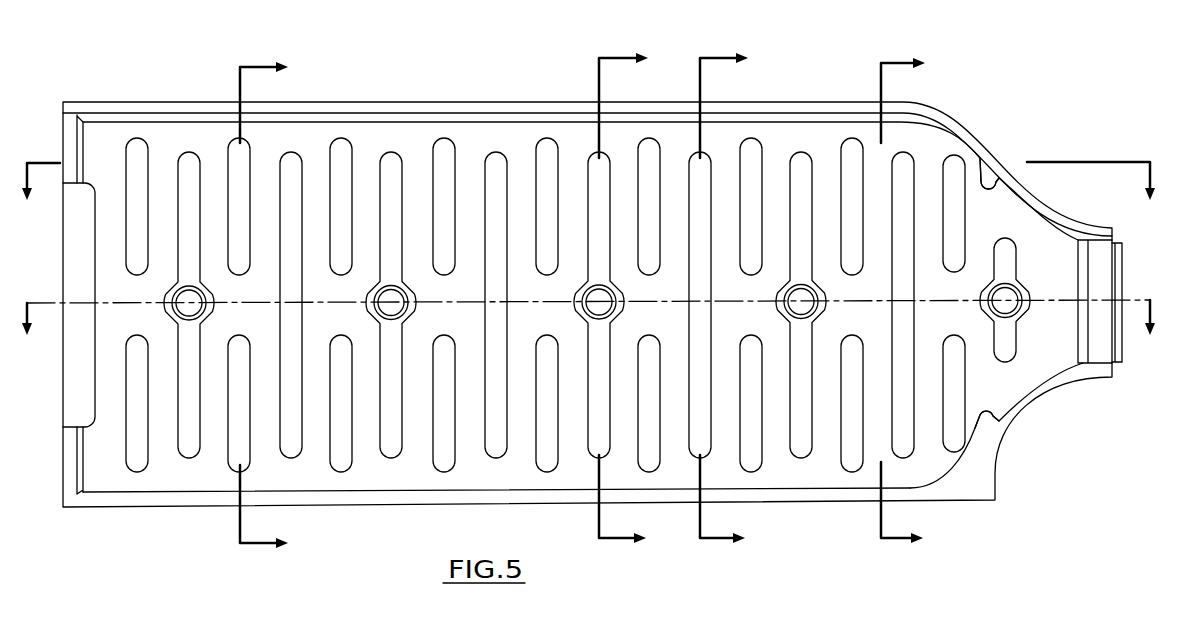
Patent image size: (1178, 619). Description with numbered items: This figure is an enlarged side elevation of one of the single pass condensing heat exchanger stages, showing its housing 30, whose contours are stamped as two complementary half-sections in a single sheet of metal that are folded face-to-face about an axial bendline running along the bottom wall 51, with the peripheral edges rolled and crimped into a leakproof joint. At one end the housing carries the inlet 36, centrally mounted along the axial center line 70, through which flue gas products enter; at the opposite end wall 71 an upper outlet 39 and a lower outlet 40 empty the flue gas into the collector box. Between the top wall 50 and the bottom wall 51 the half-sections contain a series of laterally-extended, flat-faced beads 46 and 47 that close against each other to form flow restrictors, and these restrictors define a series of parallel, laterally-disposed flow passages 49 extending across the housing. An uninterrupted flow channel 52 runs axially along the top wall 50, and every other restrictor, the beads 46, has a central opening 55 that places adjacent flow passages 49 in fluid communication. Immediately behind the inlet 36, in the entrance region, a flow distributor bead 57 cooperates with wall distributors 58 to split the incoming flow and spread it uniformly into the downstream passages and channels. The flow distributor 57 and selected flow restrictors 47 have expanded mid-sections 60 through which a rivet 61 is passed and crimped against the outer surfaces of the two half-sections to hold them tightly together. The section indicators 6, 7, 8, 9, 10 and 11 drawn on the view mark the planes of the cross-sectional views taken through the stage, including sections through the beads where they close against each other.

The housing 30 is at (452, 82).
The top wall 50 is at (100, 108).
The bottom wall 51 is at (137, 504).
The upper outlet 39 is at (66, 156).
The lower outlet 40 is at (67, 468).
The end wall 71 is at (80, 258).
The flat-faced bead 46 is at (343, 137).
The flat-faced bead 47 is at (496, 150).
The flow channel 52 is at (585, 130).
The flow passage 49 is at (367, 398).
The expanded mid-section 60 is at (410, 295).
The rivet 61 is at (788, 312).
The axial center line 70 is at (357, 307).
The central opening 55 is at (873, 325).
The flow distributor bead 57 is at (1007, 355).
The wall distributor 58 is at (985, 177).
The inlet 36 is at (1100, 272).
The section line 6- 6 is at (589, 197).
The section line 7- 7 is at (590, 335).
The section line 8- 8 is at (734, 300).
The section line 9- 9 is at (913, 302).
The section line 10- 10 is at (277, 307).
The section line 11- 11 is at (637, 300).